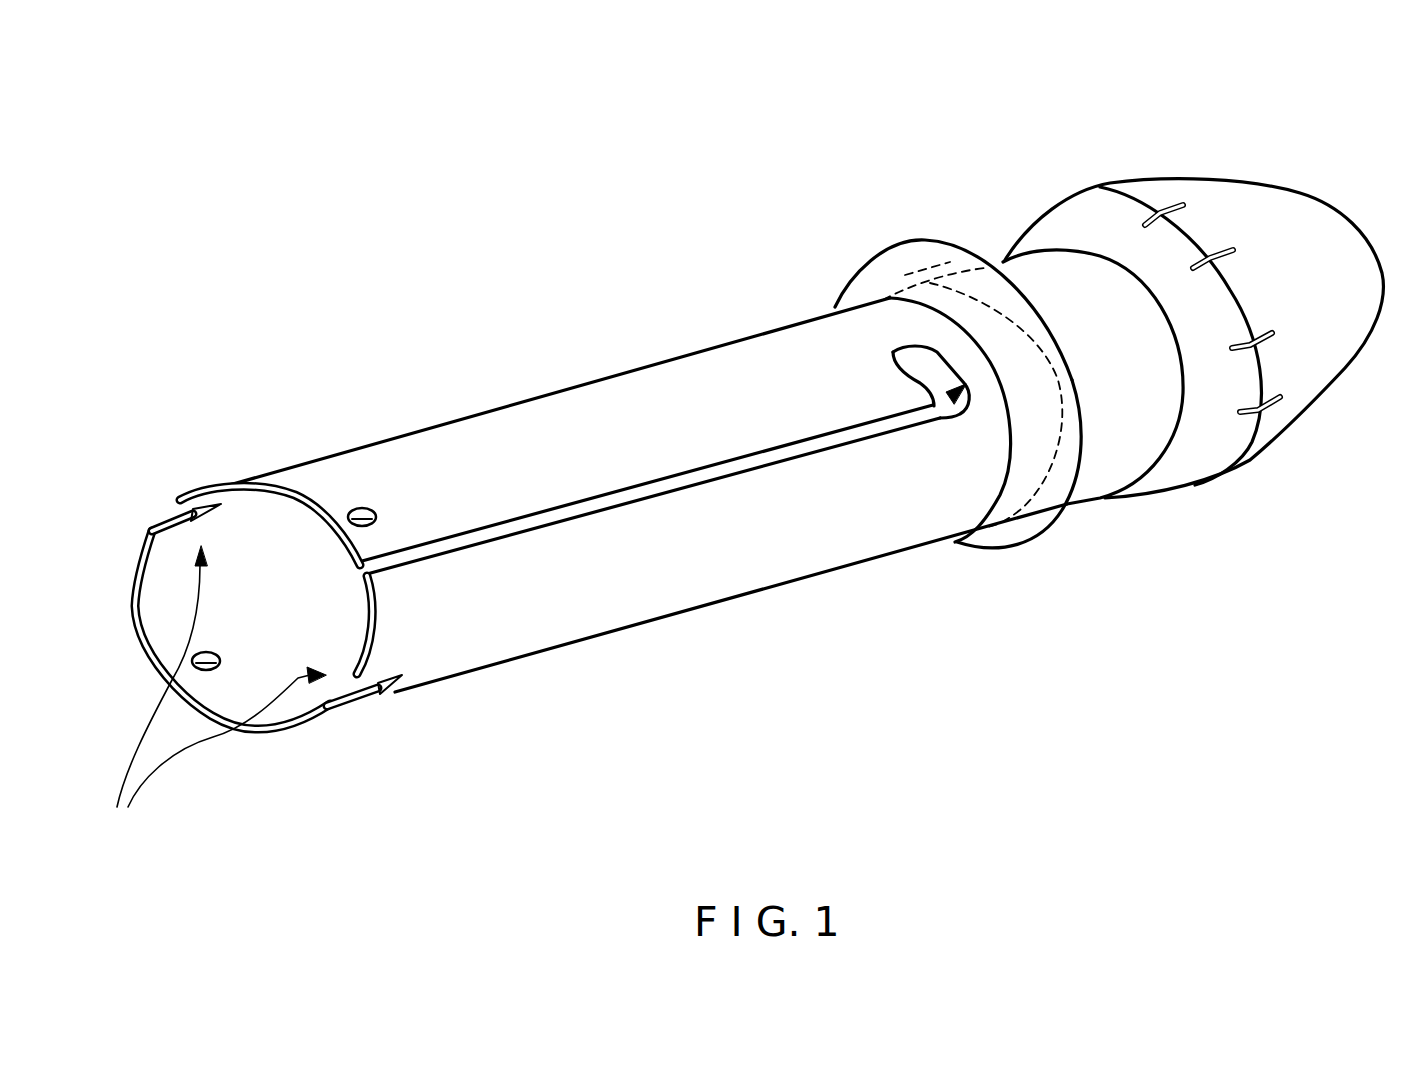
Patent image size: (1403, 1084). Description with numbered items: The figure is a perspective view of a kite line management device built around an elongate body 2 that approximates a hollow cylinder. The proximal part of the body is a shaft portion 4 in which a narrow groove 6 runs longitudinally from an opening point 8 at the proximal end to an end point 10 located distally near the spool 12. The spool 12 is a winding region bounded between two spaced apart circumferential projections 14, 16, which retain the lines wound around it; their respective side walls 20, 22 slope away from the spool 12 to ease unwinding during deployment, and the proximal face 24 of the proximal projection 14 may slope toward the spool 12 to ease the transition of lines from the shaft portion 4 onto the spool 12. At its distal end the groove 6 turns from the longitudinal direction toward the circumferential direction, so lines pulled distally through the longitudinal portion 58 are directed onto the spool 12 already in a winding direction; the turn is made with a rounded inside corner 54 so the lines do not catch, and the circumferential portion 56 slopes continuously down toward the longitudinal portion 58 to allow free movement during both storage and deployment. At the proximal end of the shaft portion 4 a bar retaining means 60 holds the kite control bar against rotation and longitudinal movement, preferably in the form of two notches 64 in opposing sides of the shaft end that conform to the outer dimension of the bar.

The elongate body 2 is at (522, 402).
The shaft portion 4 is at (670, 616).
The groove 6 is at (660, 488).
The opening point 8 is at (356, 570).
The end point 10 is at (893, 352).
The spool 12 is at (1000, 260).
The proximal circumferential projection 14 is at (1059, 518).
The distal circumferential projection 16 is at (1202, 460).
The side wall of proximal circumferential projection 20 is at (951, 243).
The side wall of distal circumferential projection 22 is at (1062, 218).
The proximal face 24 is at (1020, 548).
The rounded inside corner 54 is at (983, 397).
The distal end of the groove 56 is at (946, 388).
The longitudinal portion 58 is at (793, 444).
The bar retaining means 60 is at (210, 699).
The notches 64 is at (175, 514).